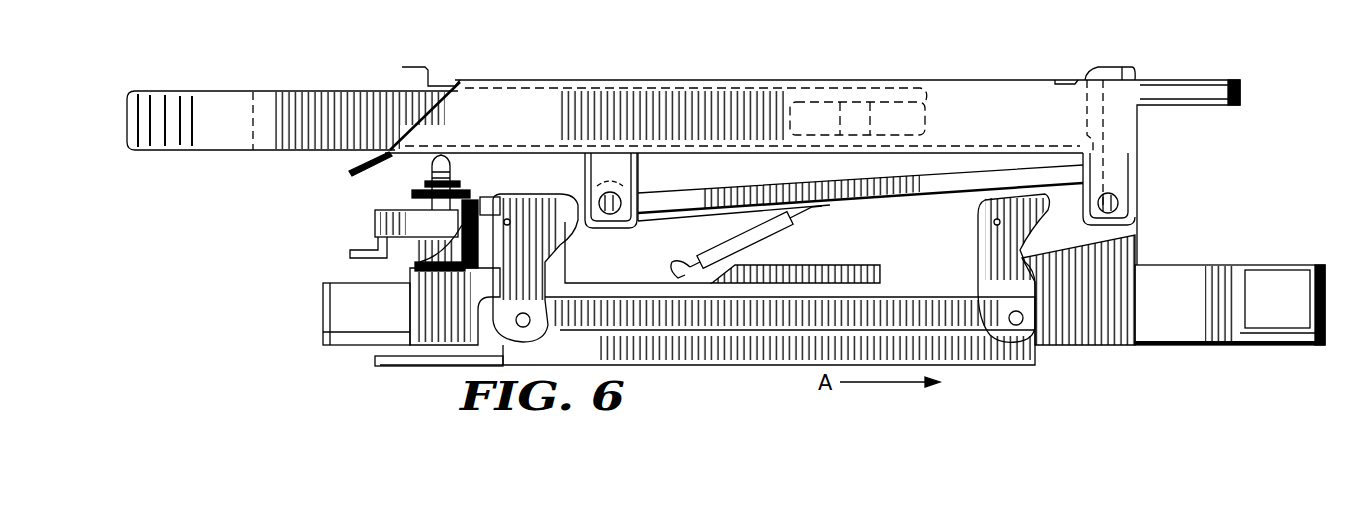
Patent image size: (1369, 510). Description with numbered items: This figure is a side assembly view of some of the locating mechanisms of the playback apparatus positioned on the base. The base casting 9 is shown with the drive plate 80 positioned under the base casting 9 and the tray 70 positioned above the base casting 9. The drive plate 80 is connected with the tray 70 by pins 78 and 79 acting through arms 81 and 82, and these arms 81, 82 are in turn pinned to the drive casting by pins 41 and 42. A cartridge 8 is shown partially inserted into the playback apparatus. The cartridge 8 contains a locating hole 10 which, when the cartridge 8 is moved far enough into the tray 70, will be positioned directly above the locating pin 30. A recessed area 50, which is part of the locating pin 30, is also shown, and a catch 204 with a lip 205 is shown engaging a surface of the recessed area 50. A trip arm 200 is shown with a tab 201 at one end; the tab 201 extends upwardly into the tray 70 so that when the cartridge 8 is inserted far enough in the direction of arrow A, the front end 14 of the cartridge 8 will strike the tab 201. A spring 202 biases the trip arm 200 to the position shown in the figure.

The cartridge 8 is at (338, 96).
The base casting 9 is at (1166, 326).
The locating hole 10 is at (256, 92).
The front end 14 is at (930, 100).
The locating pin 30 is at (432, 166).
The pin 41 is at (512, 223).
The pin 42 is at (1003, 222).
The recessed area 50 is at (425, 200).
The tray 70 is at (1001, 86).
The pin 78 is at (614, 192).
The pin 79 is at (1130, 196).
The drive plate 80 is at (778, 365).
The arm 81 is at (490, 282).
The arm 82 is at (1038, 300).
The trip arm 200 is at (707, 199).
The tab 201 is at (1137, 64).
The spring 202 is at (792, 220).
The catch 204 is at (408, 295).
The lip 205 is at (380, 262).